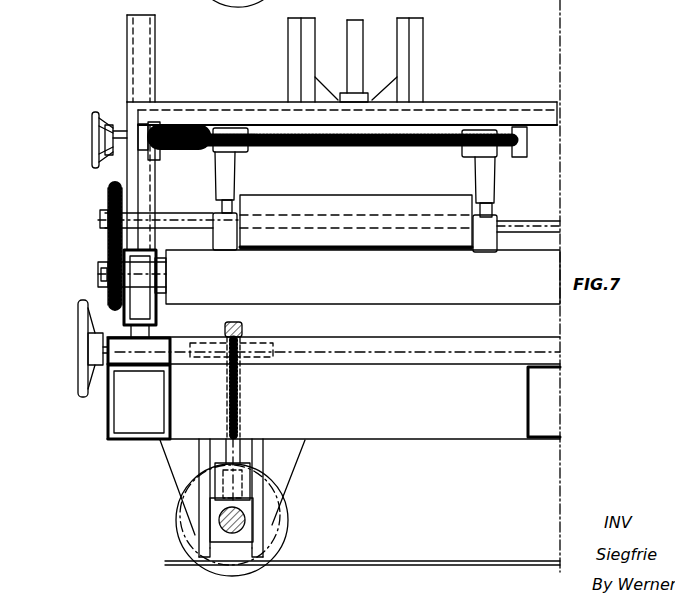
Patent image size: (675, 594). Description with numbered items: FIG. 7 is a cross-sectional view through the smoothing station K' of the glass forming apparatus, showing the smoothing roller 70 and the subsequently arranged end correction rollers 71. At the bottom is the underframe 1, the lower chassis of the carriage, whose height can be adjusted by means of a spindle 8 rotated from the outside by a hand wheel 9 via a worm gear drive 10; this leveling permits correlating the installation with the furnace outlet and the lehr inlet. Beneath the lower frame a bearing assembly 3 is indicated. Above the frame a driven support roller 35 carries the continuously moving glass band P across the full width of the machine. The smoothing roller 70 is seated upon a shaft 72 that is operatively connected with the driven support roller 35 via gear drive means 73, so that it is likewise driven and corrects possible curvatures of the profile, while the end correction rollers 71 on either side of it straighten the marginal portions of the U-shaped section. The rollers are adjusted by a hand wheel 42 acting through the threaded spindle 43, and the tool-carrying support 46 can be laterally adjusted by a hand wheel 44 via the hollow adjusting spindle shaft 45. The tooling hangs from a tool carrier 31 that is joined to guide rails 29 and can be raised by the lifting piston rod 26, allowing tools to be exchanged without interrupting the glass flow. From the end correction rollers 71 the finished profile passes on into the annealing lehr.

The underframe 1 is at (386, 432).
The bearing and support roller assembly 3 is at (282, 523).
The spindle 8 is at (227, 396).
The hand wheel 9 is at (83, 392).
The worm gear drive 10 is at (246, 366).
The lifting piston rod 26 is at (356, 62).
The guide rail 29 is at (290, 56).
The tool carrier 31 is at (187, 106).
The support roller 35 is at (337, 298).
The hand wheel 42 is at (97, 113).
The threaded spindle 43 is at (285, 148).
The hand wheel 44 is at (108, 168).
The adjusting spindle shaft 45 is at (183, 150).
The support 46 is at (518, 157).
The smoothing roller 70 is at (373, 205).
The end correction roller 71 is at (222, 220).
The shaft 72 is at (550, 224).
The gear drive means 73 is at (107, 234).
The smoothing station K' is at (65, 278).
The glass band P is at (383, 257).